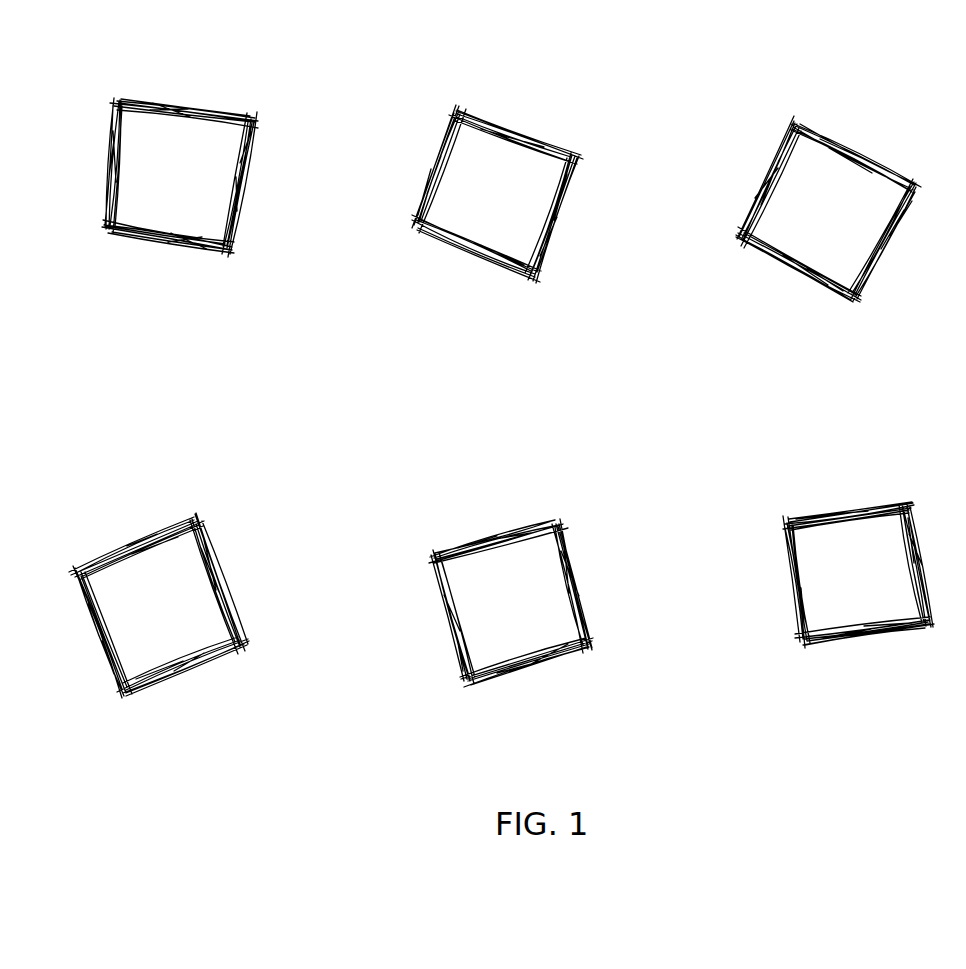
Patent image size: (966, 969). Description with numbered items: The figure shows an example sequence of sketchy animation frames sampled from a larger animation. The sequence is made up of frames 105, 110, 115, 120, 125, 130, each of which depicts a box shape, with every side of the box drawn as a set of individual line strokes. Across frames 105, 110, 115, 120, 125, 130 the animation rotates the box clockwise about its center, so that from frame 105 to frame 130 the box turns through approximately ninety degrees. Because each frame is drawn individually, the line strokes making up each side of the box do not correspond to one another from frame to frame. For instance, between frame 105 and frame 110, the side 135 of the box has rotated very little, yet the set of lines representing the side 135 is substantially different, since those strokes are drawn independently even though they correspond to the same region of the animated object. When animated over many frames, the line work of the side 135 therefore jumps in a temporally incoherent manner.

The frame 105 is at (197, 168).
The frame 110 is at (508, 290).
The frame 115 is at (833, 308).
The frame 120 is at (203, 680).
The frame 125 is at (562, 673).
The frame 130 is at (893, 657).
The side 135 is at (143, 100).